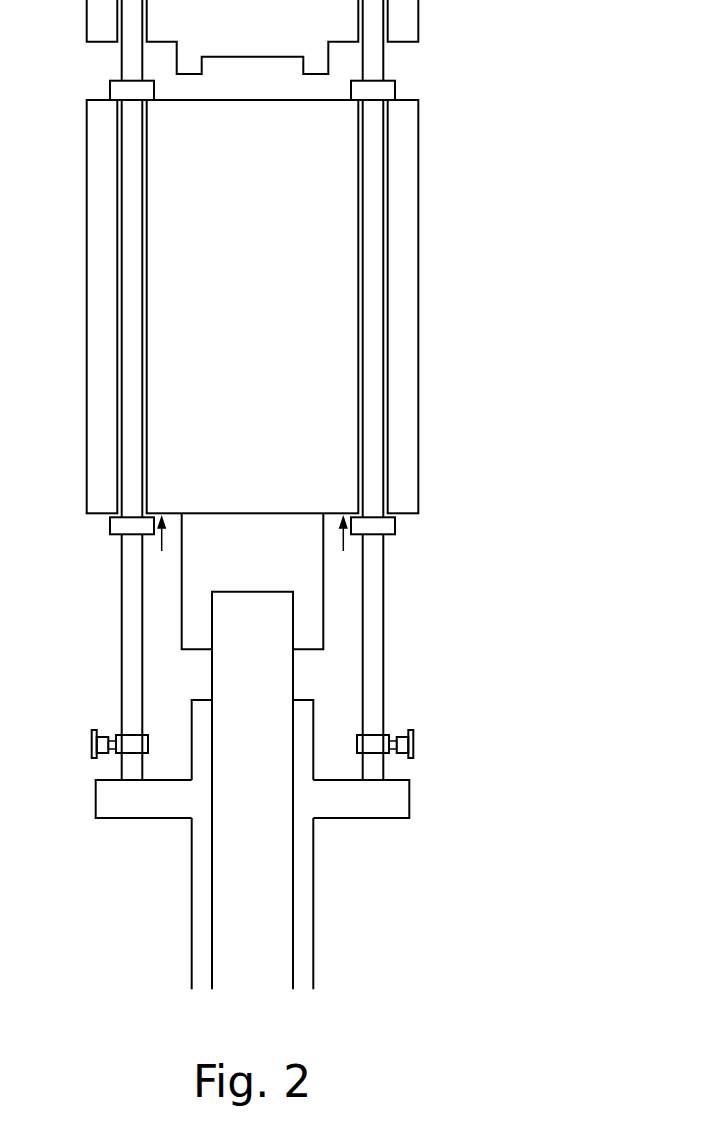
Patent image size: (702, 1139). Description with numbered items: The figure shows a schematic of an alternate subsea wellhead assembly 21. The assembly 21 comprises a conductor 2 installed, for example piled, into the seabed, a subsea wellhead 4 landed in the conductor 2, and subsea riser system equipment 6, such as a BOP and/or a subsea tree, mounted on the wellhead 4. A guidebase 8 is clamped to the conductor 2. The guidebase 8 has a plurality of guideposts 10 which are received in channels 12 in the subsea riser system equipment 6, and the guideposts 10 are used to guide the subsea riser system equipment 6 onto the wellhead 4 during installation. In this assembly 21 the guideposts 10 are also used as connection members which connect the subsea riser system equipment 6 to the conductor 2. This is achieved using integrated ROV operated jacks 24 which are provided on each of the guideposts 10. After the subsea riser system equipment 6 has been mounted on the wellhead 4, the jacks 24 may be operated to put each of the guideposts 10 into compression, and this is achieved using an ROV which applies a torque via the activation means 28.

The conductor 2 is at (314, 923).
The subsea wellhead 4 is at (293, 631).
The subsea riser system equipment 6 is at (419, 257).
The guidebase 8 is at (409, 798).
The guideposts 10 is at (384, 576).
The channels 12 is at (387, 319).
The subsea wellhead assembly 21 is at (523, 437).
The ROV operated jacks 24 is at (110, 535).
The activation means 28 is at (92, 738).